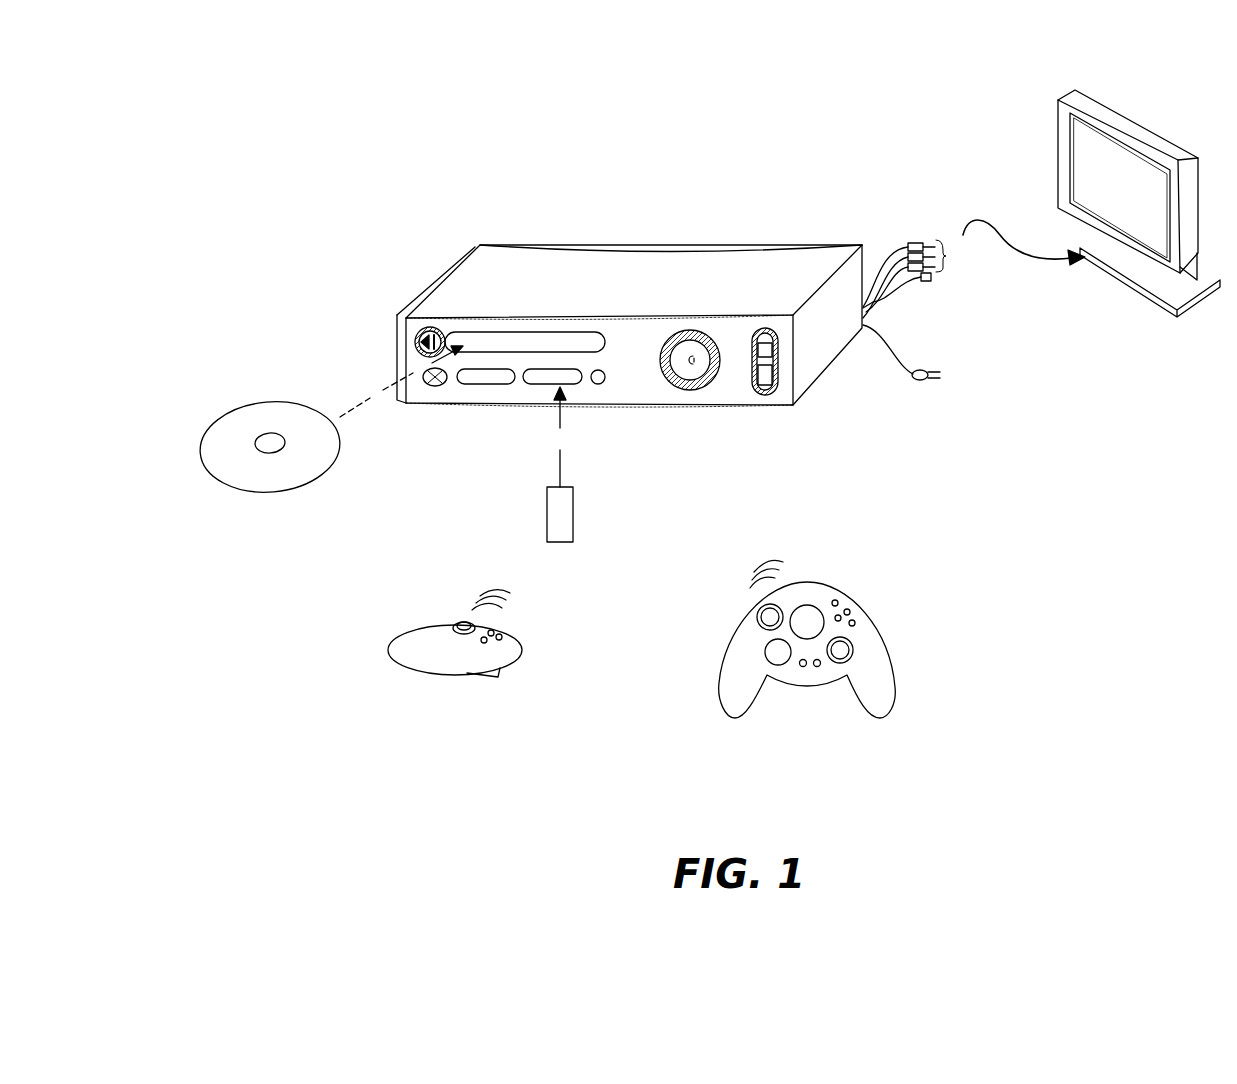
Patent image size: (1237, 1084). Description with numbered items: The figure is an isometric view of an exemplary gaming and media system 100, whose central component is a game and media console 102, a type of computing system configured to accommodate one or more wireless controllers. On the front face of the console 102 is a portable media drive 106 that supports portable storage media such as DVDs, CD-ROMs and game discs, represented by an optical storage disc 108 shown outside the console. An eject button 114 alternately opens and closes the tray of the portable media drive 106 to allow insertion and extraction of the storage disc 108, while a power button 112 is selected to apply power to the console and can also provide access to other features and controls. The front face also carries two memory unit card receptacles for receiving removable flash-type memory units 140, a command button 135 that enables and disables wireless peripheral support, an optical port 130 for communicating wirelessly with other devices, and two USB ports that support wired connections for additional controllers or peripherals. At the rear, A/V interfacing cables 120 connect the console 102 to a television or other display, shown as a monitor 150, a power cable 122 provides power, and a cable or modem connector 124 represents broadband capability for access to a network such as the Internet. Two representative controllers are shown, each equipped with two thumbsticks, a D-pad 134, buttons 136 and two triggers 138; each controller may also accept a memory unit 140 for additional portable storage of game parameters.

The gaming and media system 100 is at (657, 216).
The game and media console 102 is at (512, 257).
The portable media drive 106 is at (532, 332).
The optical storage disc 108 is at (278, 488).
The power button 112 is at (692, 390).
The eject button 114 is at (416, 340).
The A/V interfacing cables 120 is at (910, 242).
The power cable 122 is at (914, 380).
The cable or modem connector 124 is at (927, 282).
The optical port 130 is at (433, 387).
The D-pad 134 is at (765, 650).
The command button 135 is at (598, 385).
The buttons 136 is at (850, 612).
The trigger 138 is at (497, 678).
The memory unit 140 is at (560, 542).
The monitor 150 is at (1057, 158).